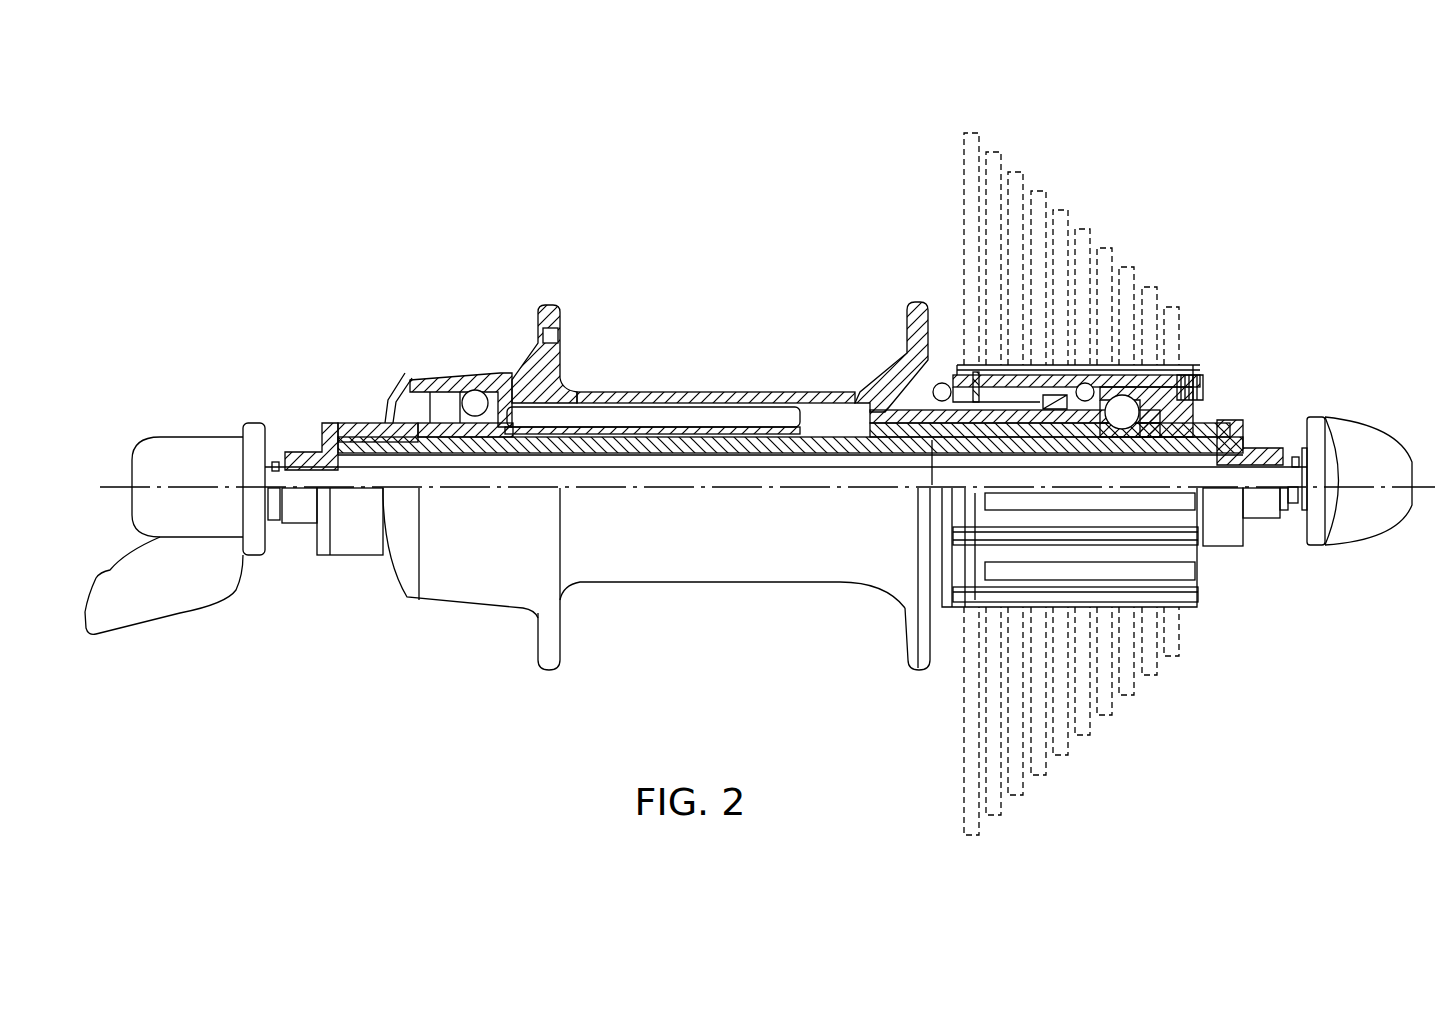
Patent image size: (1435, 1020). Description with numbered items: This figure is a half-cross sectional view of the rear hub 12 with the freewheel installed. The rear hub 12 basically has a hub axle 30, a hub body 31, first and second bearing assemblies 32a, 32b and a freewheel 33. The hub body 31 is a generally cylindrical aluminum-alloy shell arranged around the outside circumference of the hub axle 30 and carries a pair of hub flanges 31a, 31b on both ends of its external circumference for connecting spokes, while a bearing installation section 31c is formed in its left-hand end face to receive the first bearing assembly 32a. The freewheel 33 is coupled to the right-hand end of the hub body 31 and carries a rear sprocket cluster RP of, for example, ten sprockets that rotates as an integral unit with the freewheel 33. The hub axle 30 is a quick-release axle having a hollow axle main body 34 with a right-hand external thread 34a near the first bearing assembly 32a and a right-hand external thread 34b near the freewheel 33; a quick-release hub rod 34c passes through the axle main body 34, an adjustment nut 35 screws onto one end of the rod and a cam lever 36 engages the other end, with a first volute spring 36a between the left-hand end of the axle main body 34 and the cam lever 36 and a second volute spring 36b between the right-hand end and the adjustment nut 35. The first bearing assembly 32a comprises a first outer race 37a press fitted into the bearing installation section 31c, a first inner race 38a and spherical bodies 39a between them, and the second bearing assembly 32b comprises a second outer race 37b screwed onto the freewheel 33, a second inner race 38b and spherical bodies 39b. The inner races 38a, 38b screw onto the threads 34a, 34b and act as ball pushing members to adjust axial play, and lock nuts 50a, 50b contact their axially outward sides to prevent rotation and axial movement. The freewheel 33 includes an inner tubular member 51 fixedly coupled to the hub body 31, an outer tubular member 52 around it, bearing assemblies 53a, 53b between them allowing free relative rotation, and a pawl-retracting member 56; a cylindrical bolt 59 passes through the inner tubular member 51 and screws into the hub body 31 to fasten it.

The rear hub 12 is at (893, 133).
The rear sprocket cluster RP is at (1052, 192).
The hub axle 30 is at (646, 428).
The hub body 31 is at (738, 390).
The hub flange 31a is at (552, 305).
The hub flange 31b is at (907, 325).
The bearing installation section 31c is at (420, 378).
The first bearing assembly 32a is at (463, 372).
The second bearing assembly 32b is at (1140, 388).
The freewheel 33 is at (1078, 368).
The axle main body 34 is at (697, 448).
The external thread 34a is at (372, 430).
The external thread 34b is at (1230, 430).
The quick-release hub rod 34c is at (300, 475).
The adjustment nut 35 is at (1370, 457).
The cam lever 36 is at (175, 590).
The first volute spring 36a is at (275, 460).
The second volute spring 36b is at (1295, 455).
The first outer race 37a is at (498, 375).
The second outer race 37b is at (1120, 375).
The first inner race 38a is at (432, 440).
The second inner race 38b is at (1138, 400).
The spherical bodies 39a is at (478, 410).
The spherical bodies 39b is at (1120, 425).
The lock nut 50a is at (350, 558).
The lock nut 50b is at (1262, 520).
The inner tubular member 51 is at (1053, 428).
The outer tubular member 52 is at (1058, 362).
The bearing assembly 53a is at (938, 382).
The bearing assembly 53b is at (1088, 382).
The pawl-retracting member 56 is at (977, 370).
The cylindrical bolt 59 is at (932, 470).